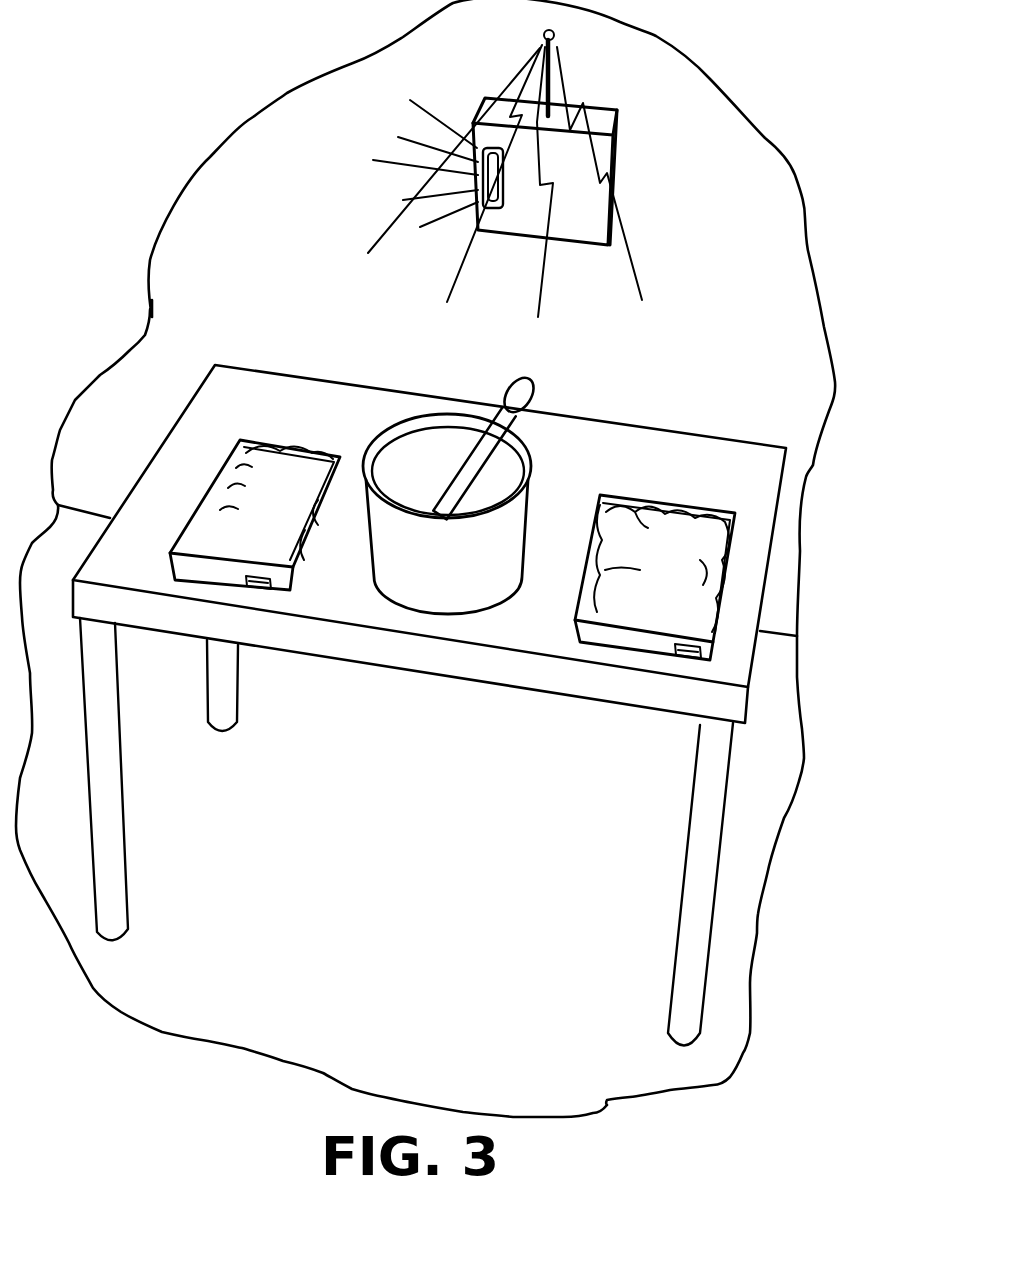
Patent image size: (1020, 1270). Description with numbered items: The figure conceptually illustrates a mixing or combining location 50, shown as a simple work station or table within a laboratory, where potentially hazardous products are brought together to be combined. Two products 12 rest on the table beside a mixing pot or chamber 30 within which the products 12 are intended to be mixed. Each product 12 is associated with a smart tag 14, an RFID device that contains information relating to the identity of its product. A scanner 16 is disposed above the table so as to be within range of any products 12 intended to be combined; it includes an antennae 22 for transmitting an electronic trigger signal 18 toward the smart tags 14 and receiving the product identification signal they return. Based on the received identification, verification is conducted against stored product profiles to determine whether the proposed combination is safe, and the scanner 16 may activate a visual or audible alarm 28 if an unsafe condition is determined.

The mixing or combining location 50 is at (256, 189).
The scanner 16 is at (619, 131).
The antennae 22 is at (553, 81).
The electronic trigger signal 18 is at (642, 273).
The alarm 28 is at (477, 181).
The mixing pot or chamber 30 is at (522, 535).
The products 12 is at (197, 578).
The smart tag 14 is at (260, 590).